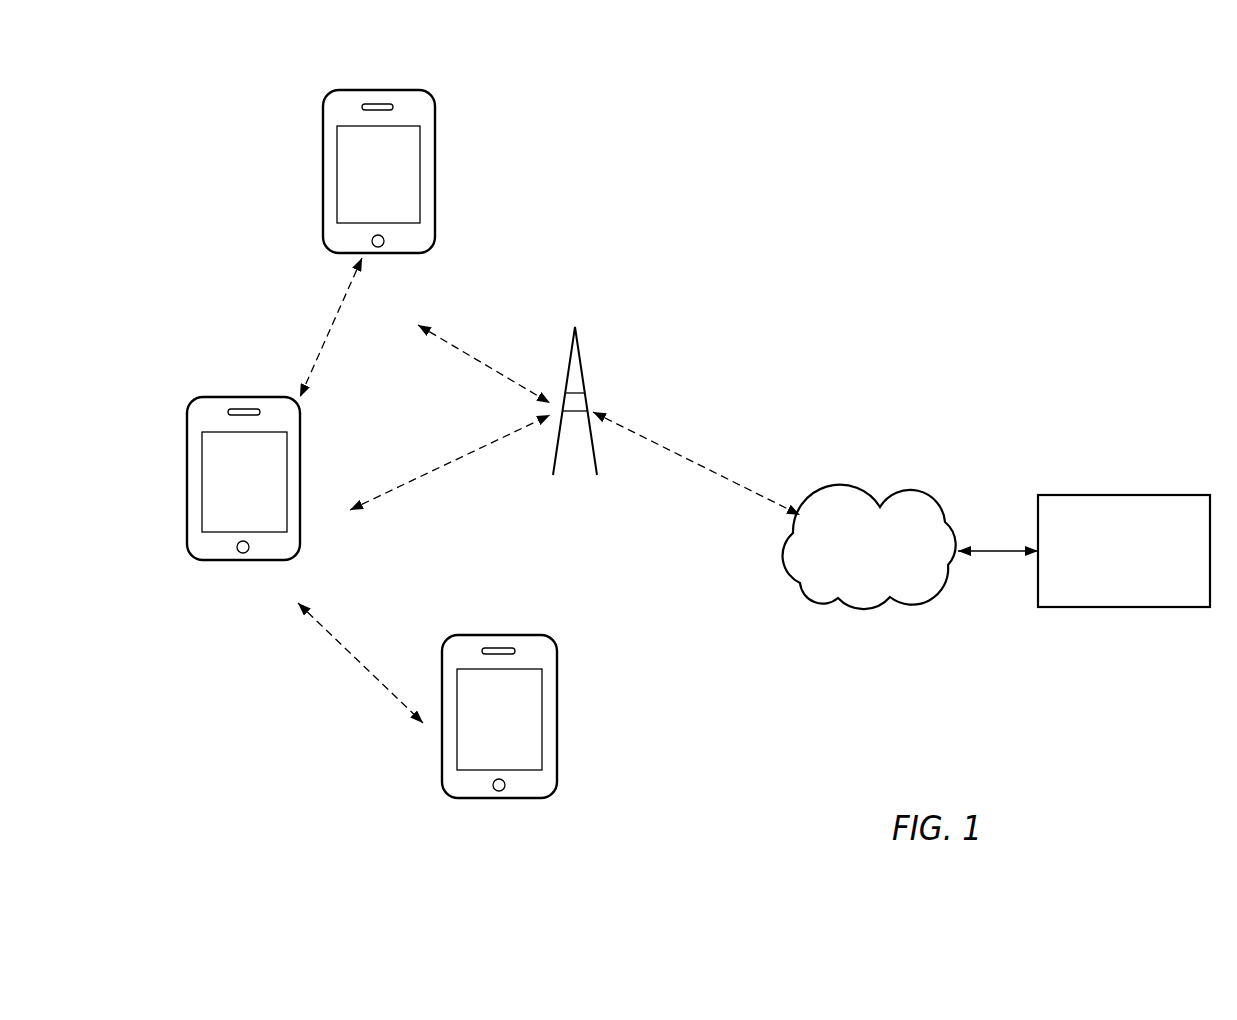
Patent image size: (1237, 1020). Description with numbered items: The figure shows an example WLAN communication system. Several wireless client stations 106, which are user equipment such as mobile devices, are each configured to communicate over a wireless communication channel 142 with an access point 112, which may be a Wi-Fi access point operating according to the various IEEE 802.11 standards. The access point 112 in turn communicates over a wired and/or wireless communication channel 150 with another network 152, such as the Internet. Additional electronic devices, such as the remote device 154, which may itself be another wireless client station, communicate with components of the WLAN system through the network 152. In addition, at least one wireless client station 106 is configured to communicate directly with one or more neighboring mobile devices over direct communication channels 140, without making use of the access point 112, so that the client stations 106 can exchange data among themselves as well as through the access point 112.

The wireless client station 106 is at (375, 255).
The access point 112 is at (592, 474).
The direct communication channel 140 is at (340, 308).
The wireless communication channel 142 is at (472, 357).
The communication channel 150 is at (705, 465).
The network 152 is at (853, 572).
The remote device 154 is at (1106, 582).